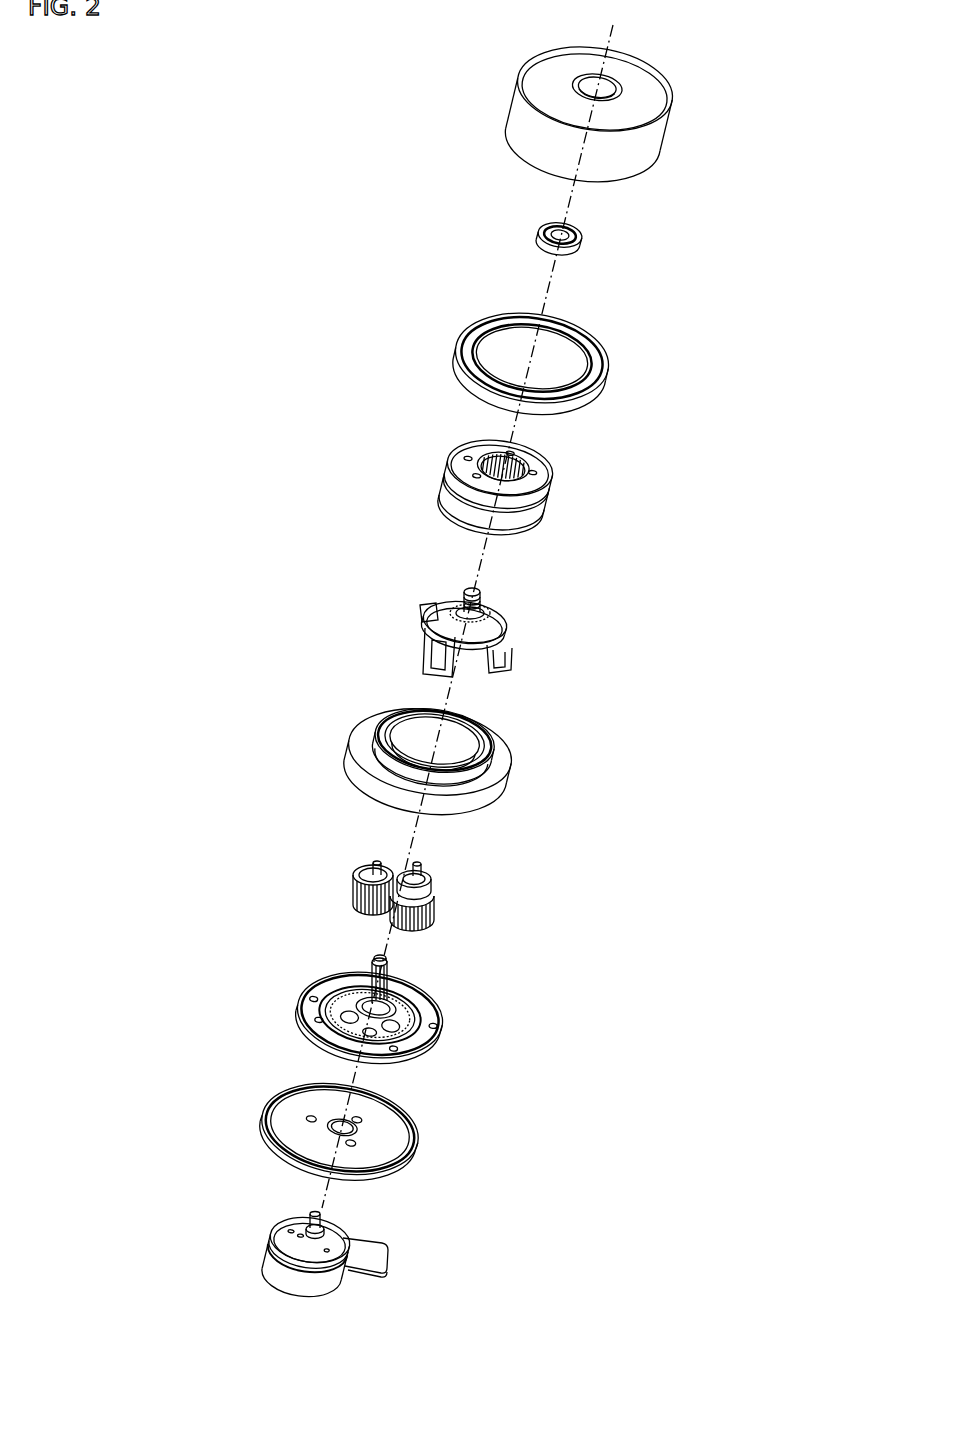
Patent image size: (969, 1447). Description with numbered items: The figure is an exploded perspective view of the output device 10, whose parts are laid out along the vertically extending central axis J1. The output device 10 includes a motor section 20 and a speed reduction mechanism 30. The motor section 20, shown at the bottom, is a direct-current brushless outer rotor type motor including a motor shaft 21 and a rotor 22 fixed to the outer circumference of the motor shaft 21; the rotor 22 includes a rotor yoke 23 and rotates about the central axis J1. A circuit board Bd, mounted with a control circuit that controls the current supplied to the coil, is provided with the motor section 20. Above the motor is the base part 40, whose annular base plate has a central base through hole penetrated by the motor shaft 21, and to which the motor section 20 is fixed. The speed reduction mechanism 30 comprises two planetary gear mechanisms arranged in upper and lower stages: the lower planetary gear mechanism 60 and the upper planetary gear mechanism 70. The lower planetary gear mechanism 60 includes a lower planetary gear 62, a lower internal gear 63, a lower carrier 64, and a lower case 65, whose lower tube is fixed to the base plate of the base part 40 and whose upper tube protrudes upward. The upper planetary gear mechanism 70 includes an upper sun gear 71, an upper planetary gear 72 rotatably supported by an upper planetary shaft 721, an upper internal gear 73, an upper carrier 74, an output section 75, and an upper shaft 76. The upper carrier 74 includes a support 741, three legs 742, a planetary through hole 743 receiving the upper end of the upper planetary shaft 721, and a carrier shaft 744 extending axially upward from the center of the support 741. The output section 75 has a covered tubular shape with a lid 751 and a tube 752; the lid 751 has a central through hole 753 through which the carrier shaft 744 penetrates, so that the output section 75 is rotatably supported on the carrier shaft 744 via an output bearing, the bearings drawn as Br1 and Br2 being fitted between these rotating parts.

The output device 10 is at (243, 175).
The motor section 20 is at (358, 1287).
The motor shaft 21 is at (322, 1222).
The rotor 22 is at (272, 1262).
The rotor yoke 23 is at (280, 1273).
The speed reduction mechanism 30 is at (250, 441).
The base part 40 is at (247, 1102).
The lower planetary gear mechanism 60 is at (167, 892).
The lower planetary gear 62 is at (425, 1020).
The lower internal gear 63 is at (320, 1007).
The lower carrier 64 is at (322, 995).
The lower case 65 is at (508, 780).
The upper planetary gear mechanism 70 is at (370, 313).
The upper sun gear 71 is at (392, 983).
The upper planetary gear 72 is at (372, 900).
The upper planetary shaft 721 is at (420, 861).
The upper internal gear 73 is at (550, 497).
The upper carrier 74 is at (362, 615).
The support 741 is at (428, 615).
The legs 742 is at (425, 657).
The planetary through hole 743 is at (498, 630).
The carrier shaft 744 is at (485, 603).
The output section 75 is at (512, 100).
The lid 751 is at (665, 95).
The tube 752 is at (650, 160).
The through hole 753 is at (590, 80).
The upper shaft 76 is at (388, 965).
The circuit board Bd is at (383, 1253).
The first bearing Br1 is at (460, 357).
The second bearing Br2 is at (545, 230).
The central axis J1 is at (617, 35).